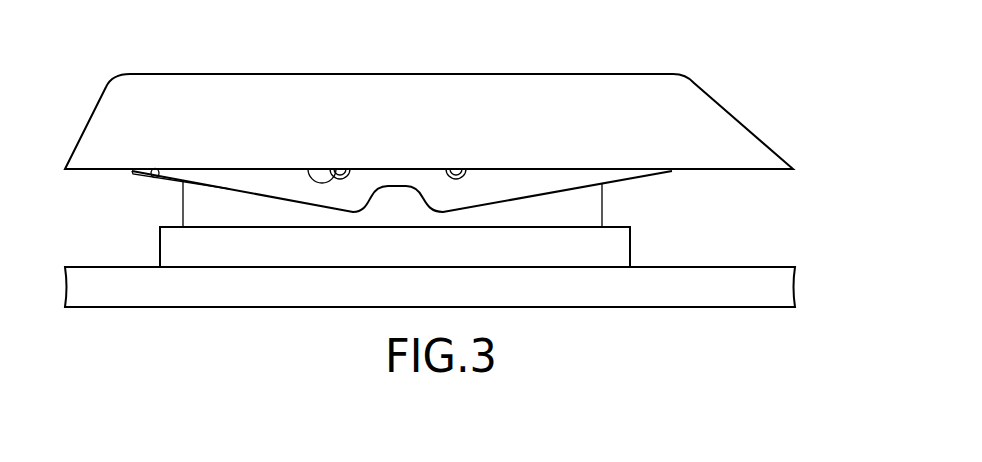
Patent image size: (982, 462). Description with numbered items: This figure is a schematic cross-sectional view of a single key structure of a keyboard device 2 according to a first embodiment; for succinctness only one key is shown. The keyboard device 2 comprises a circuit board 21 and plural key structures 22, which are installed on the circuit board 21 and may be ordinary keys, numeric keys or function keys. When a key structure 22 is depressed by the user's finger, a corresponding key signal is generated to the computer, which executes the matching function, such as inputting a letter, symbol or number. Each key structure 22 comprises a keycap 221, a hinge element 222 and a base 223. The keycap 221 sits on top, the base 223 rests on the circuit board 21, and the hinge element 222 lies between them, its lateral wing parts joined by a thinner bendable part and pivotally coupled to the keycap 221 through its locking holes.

The keyboard device 2 is at (242, 38).
The circuit board 21 is at (694, 275).
The key structure 22 is at (747, 99).
The keycap 221 is at (511, 63).
The hinge element 222 is at (517, 177).
The base 223 is at (173, 238).